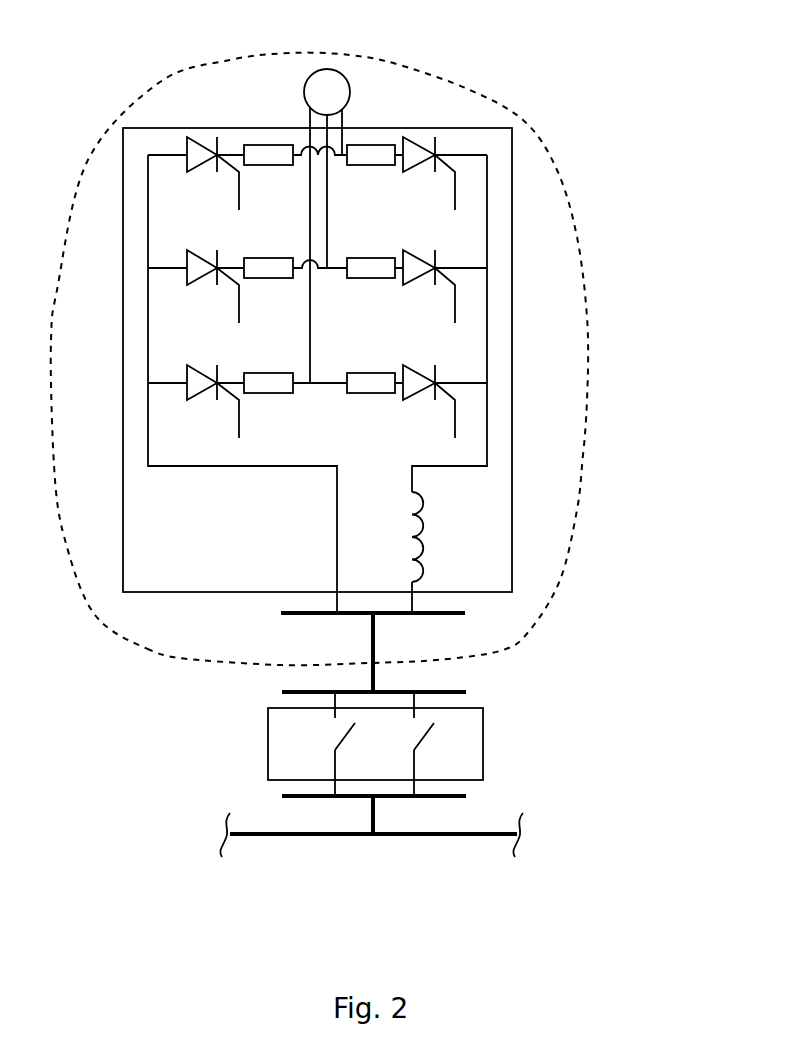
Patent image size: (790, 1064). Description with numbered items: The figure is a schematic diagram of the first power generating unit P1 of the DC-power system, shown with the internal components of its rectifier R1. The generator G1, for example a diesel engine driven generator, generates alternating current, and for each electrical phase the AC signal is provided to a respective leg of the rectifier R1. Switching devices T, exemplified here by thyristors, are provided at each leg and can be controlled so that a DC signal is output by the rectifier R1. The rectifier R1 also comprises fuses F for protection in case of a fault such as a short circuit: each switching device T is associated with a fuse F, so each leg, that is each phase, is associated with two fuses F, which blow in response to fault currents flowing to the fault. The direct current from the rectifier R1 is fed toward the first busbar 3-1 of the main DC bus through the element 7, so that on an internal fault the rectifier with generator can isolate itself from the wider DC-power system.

The generator G1 is at (346, 72).
The fuse F is at (372, 145).
The switching device T is at (446, 145).
The rectifier R1 is at (512, 332).
The first power generating unit P1 is at (583, 455).
The circuit breaker 7 is at (483, 745).
The first busbar 3-1 is at (468, 826).